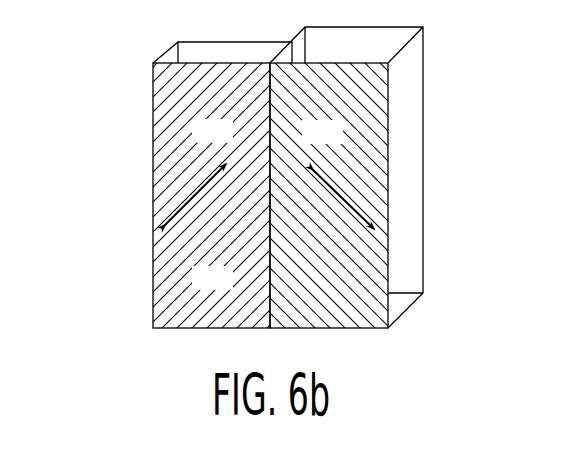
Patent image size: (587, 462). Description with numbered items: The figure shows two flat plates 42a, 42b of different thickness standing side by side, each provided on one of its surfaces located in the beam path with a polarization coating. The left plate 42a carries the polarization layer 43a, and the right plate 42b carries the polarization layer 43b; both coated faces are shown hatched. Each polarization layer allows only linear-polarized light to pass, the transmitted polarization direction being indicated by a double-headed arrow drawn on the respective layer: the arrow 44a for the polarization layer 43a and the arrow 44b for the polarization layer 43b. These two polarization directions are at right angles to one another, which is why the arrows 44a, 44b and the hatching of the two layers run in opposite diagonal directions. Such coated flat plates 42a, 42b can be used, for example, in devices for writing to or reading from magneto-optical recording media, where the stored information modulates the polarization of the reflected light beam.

The flat plate 42a is at (173, 82).
The flat plate 42b is at (372, 103).
The polarization layer 43a is at (196, 172).
The polarization layer 43b is at (338, 173).
The arrow 44a is at (293, 231).
The arrow 44b is at (338, 185).